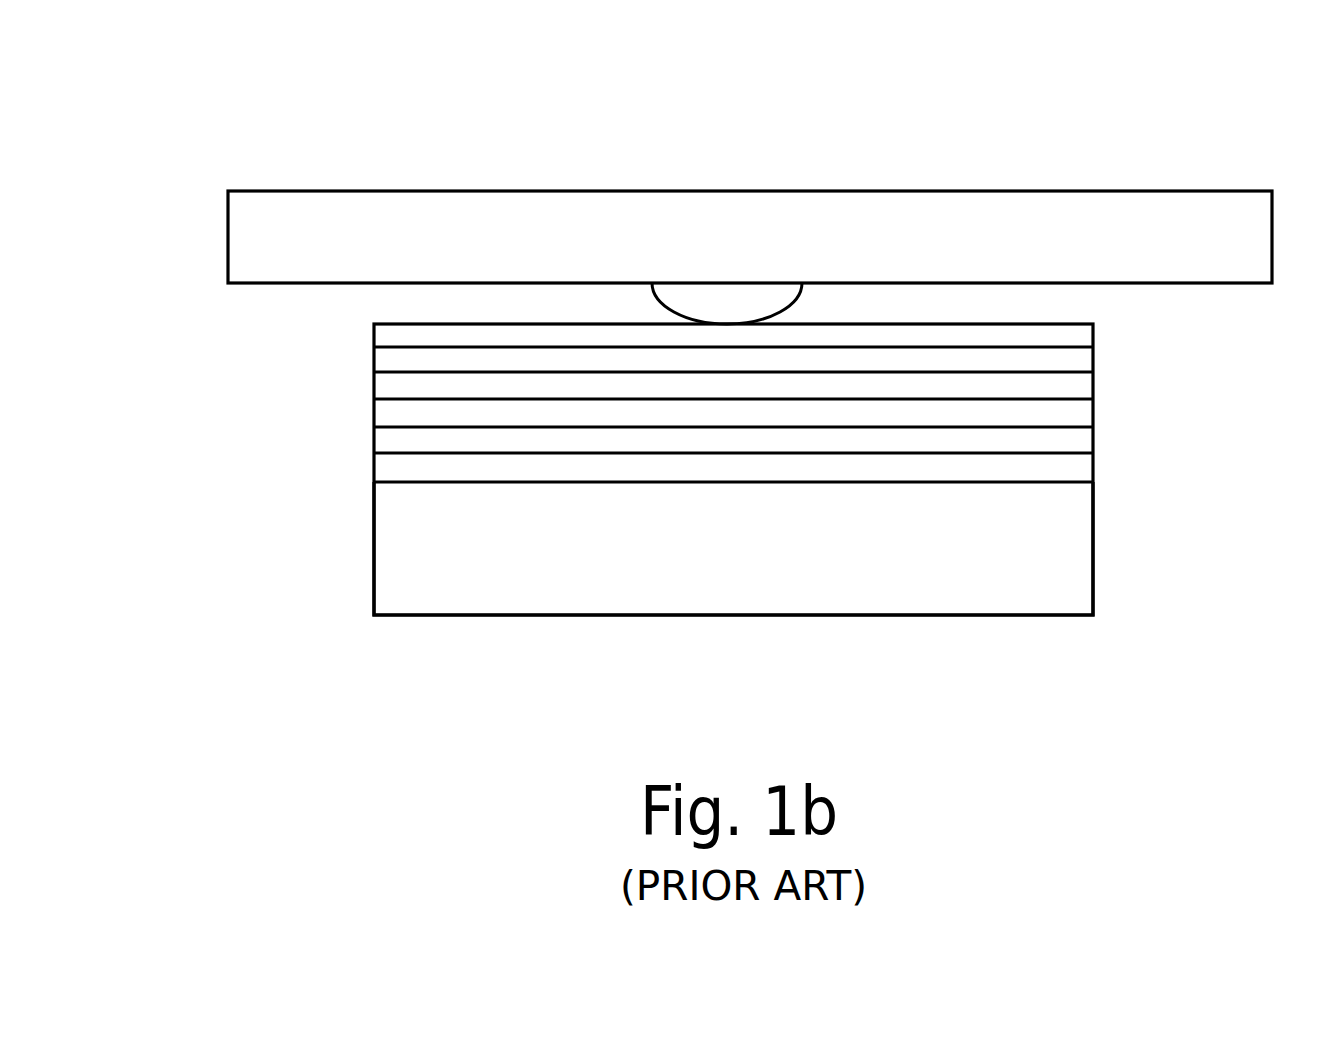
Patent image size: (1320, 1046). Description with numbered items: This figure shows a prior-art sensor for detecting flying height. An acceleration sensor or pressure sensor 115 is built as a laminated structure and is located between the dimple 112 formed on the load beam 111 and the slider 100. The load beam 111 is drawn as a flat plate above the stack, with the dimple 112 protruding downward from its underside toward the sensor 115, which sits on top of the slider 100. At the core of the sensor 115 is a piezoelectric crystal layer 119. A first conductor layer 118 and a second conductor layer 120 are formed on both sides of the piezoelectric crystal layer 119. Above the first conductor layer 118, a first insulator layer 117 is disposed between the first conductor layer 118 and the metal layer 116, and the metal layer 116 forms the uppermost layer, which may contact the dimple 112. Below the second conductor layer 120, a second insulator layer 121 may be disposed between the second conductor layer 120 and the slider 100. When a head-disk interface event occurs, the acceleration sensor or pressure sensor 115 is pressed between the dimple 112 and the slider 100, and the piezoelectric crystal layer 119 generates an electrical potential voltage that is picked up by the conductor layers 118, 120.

The slider 100 is at (412, 570).
The load beam 111 is at (370, 240).
The dimple 112 is at (738, 308).
The acceleration sensor or pressure sensor 115 is at (322, 392).
The metal layer 116 is at (1093, 333).
The first insulator layer 117 is at (1082, 355).
The first conductor layer 118 is at (1077, 380).
The piezoelectric crystal layer 119 is at (1088, 448).
The second conductor layer 120 is at (1070, 412).
The second insulator layer 121 is at (998, 467).